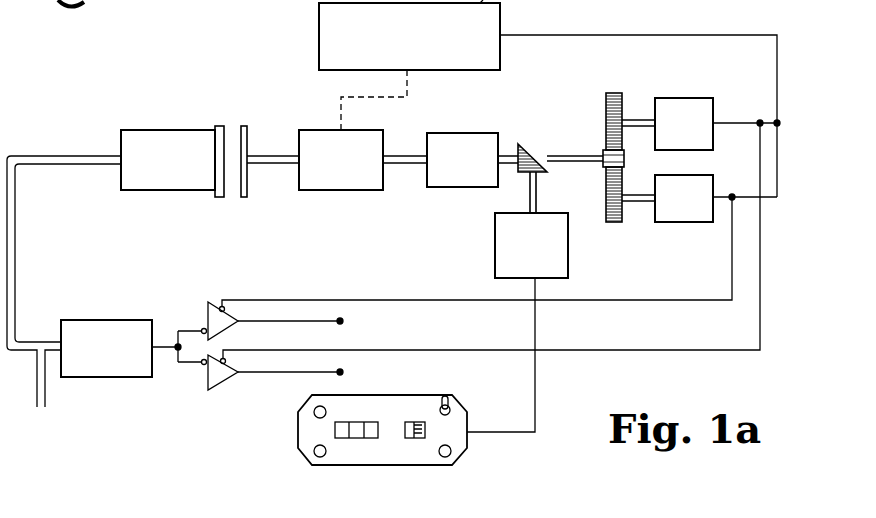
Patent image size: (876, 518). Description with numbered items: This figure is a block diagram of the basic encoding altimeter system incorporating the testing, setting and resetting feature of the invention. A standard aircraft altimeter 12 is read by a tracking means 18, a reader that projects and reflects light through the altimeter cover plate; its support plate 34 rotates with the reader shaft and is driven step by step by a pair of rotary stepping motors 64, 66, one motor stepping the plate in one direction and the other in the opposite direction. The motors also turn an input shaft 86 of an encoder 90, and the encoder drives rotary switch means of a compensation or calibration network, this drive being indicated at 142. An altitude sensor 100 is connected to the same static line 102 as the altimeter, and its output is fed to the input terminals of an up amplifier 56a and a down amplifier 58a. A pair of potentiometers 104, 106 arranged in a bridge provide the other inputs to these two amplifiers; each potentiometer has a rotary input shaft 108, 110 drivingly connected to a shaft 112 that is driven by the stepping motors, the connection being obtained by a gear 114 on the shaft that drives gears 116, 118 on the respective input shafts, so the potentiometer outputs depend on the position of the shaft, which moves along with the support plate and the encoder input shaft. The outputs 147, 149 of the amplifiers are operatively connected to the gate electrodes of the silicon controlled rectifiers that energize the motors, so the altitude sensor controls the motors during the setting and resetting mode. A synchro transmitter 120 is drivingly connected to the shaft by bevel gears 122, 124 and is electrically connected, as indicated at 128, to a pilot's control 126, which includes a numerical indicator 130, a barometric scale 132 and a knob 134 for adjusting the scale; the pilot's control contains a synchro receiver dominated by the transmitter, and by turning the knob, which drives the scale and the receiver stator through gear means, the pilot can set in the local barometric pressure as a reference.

The aircraft altimeter 12 is at (163, 140).
The support plate 34 is at (246, 128).
The tracking means 18 is at (257, 204).
The encoder 90 is at (362, 190).
The input shaft 86 is at (412, 165).
The rotary stepping motor 64 is at (470, 141).
The rotary stepping motor 66 is at (461, 132).
The drive connection to compensation network 142 is at (389, 98).
The bevel gear 124 is at (521, 147).
The bevel gear 122 is at (533, 175).
The synchro transmitter 120 is at (495, 250).
The shaft 112 is at (564, 161).
The gear 118 is at (614, 93).
The gear 114 is at (625, 160).
The gear 116 is at (616, 223).
The rotary input shaft 110 is at (634, 120).
The rotary input shaft 108 is at (637, 202).
The potentiometer 106 is at (688, 98).
The potentiometer 104 is at (690, 223).
The static line 102 is at (19, 272).
The altitude sensor 100 is at (105, 320).
The up amplifier 56a is at (210, 302).
The down amplifier 58a is at (222, 390).
The amplifier output 147 is at (343, 321).
The amplifier output 149 is at (343, 372).
The pilot's control 126 is at (374, 429).
The electrical connection 128 is at (535, 378).
The numerical indicator 130 is at (340, 430).
The barometric scale 132 is at (412, 438).
The knob 134 is at (450, 456).